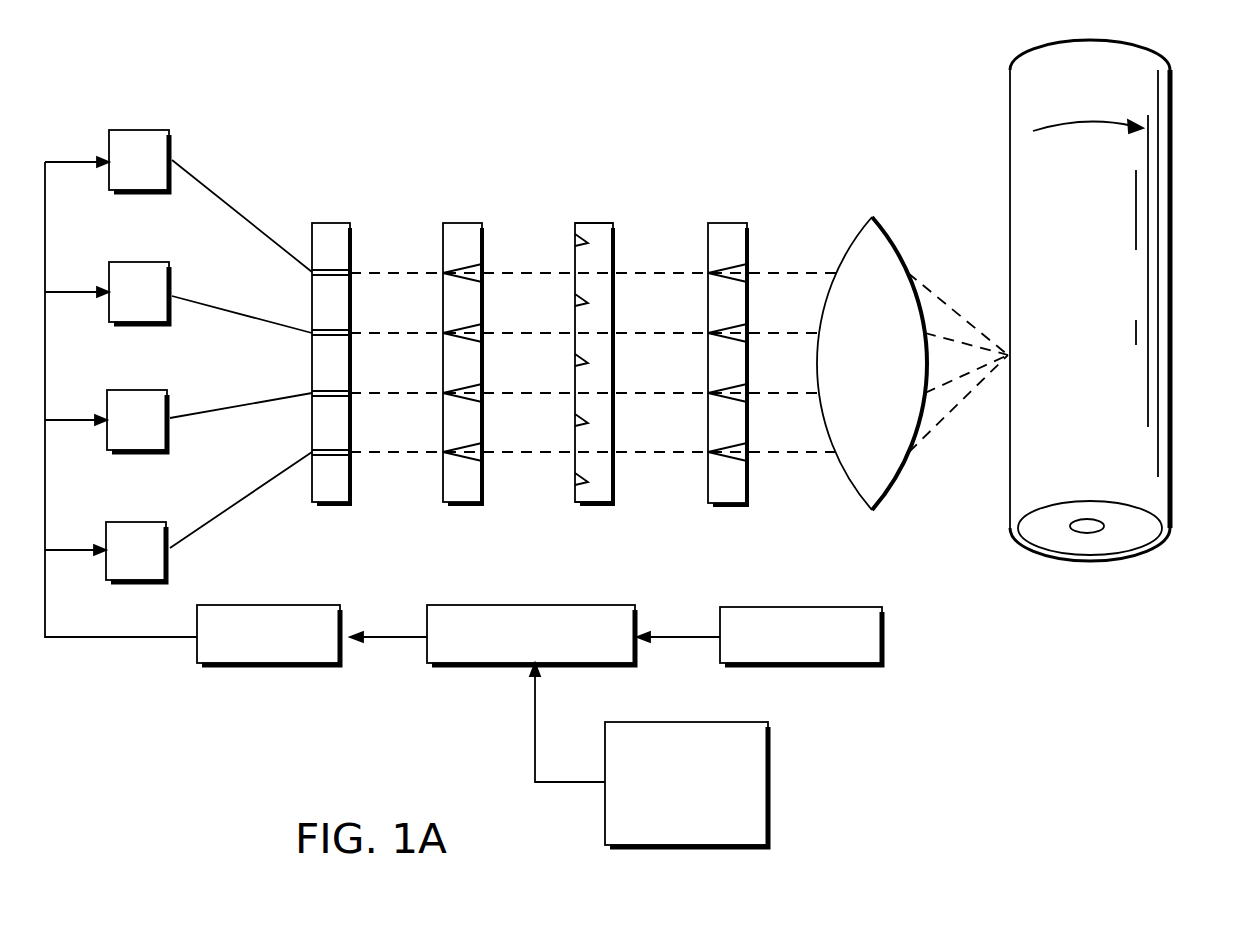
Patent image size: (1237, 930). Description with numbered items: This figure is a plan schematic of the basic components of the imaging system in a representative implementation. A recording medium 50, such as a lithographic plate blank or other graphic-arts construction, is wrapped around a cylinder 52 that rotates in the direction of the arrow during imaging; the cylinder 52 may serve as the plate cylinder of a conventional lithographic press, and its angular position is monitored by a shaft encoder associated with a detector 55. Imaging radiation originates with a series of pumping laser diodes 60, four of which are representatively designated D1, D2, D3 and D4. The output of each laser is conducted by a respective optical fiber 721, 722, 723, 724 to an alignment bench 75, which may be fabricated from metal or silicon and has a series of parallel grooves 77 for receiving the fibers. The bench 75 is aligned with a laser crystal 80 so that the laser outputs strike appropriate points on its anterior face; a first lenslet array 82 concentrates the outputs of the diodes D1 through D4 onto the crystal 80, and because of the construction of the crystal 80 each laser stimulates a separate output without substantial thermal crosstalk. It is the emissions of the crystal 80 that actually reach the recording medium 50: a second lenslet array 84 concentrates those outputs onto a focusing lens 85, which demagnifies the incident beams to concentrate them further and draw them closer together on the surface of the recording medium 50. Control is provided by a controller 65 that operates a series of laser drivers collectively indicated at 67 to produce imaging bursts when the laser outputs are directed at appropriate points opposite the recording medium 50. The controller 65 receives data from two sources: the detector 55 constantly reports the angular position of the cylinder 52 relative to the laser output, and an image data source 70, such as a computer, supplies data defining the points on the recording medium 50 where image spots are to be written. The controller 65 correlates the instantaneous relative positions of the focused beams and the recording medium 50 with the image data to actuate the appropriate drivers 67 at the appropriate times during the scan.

The pumping laser diodes 60 is at (164, 92).
The first pumping laser diode D1 is at (139, 161).
The second pumping laser diode D2 is at (139, 293).
The third pumping laser diode D3 is at (137, 421).
The fourth pumping laser diode D4 is at (136, 552).
The optical fiber 721 is at (193, 172).
The optical fiber 722 is at (192, 303).
The optical fiber 723 is at (190, 412).
The optical fiber 724 is at (212, 520).
The alignment bench 75 is at (333, 223).
The parallel grooves 77 is at (333, 268).
The first lenslet array 82 is at (463, 223).
The laser crystal 80 is at (591, 223).
The second lenslet array 84 is at (726, 223).
The focusing lens 85 is at (866, 240).
The recording medium 50 is at (1132, 391).
The cylinder 52 is at (1133, 533).
The laser drivers 67 is at (258, 605).
The controller 65 is at (532, 605).
The detector 55 is at (795, 607).
The image data source 70 is at (770, 776).